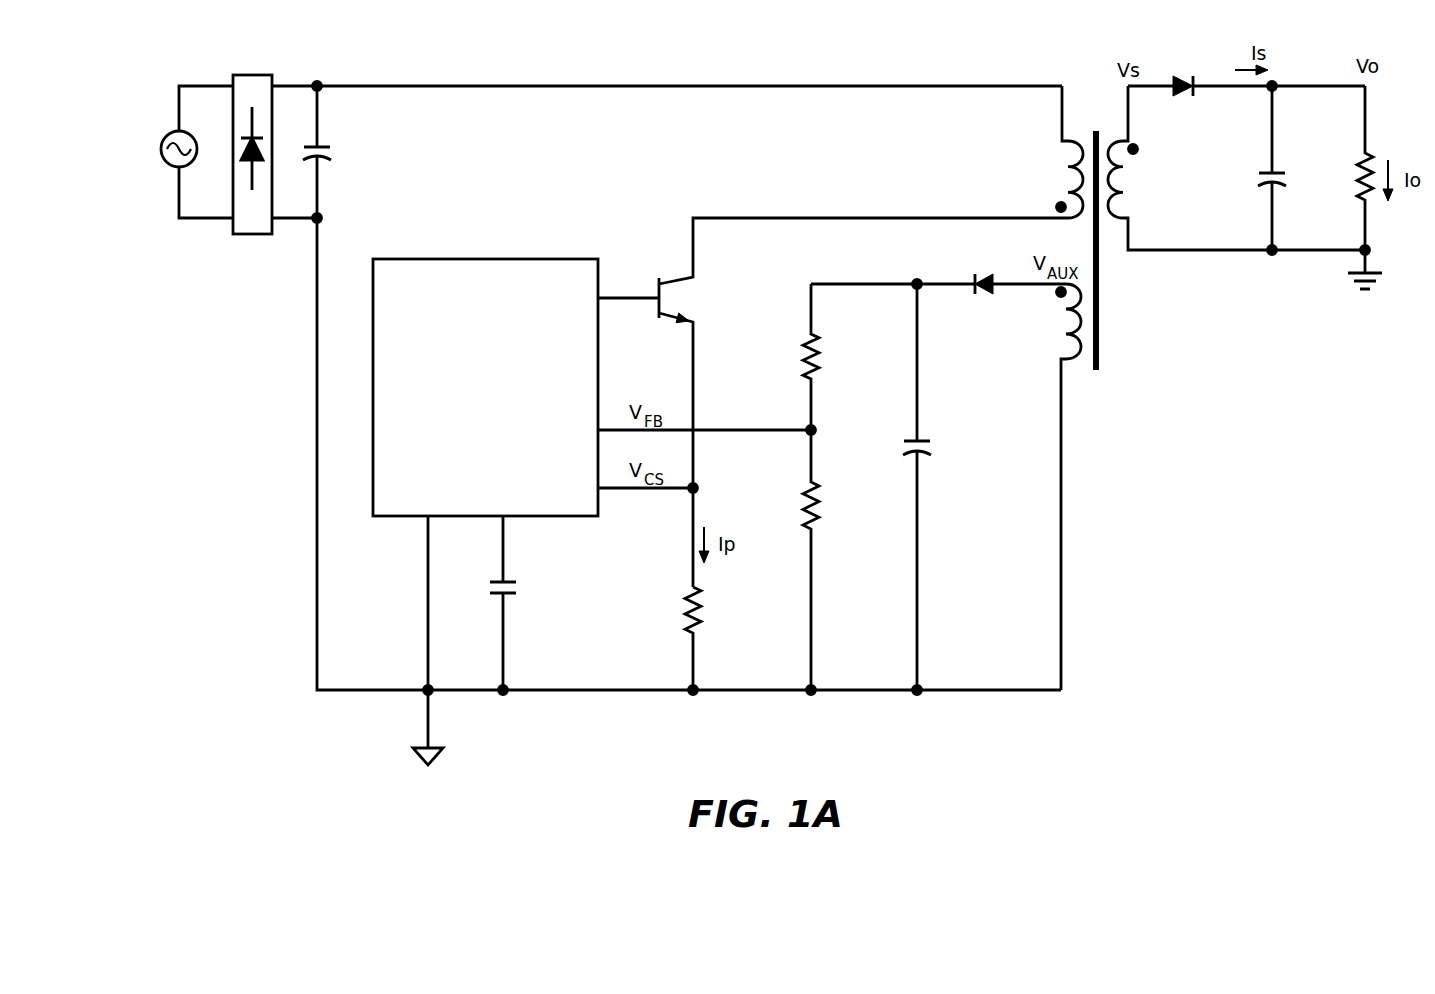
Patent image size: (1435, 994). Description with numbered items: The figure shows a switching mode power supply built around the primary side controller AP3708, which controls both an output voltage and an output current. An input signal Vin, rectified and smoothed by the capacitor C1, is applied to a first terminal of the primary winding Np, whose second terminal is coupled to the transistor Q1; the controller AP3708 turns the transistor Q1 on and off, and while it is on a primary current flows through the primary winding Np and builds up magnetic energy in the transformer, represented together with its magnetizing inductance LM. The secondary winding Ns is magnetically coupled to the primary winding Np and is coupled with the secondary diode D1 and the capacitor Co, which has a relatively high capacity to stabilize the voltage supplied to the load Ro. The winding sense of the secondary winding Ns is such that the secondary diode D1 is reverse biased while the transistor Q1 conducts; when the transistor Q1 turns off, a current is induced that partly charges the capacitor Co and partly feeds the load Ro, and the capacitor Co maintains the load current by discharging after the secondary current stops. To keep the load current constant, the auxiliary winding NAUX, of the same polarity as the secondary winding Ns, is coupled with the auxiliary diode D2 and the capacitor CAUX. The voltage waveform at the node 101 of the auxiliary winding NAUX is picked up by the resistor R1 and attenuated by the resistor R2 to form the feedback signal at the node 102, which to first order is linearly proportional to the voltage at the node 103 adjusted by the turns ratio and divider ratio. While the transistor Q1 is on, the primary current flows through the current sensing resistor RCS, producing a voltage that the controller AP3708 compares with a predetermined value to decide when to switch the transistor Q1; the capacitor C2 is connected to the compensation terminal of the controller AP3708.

The node of the auxiliary winding 101 is at (811, 284).
The feedback node 102 is at (835, 430).
The current sense node 103 is at (716, 490).
The input signal Vin is at (177, 152).
The input capacitor C1 is at (335, 152).
The primary side controller AP3708 is at (592, 387).
The transistor Q1 is at (860, 402).
The current sensing resistor RCS is at (717, 641).
The compensation capacitor C2 is at (519, 605).
The resistor R1 is at (829, 357).
The resistor R2 is at (829, 562).
The auxiliary capacitor CAUX is at (952, 487).
The auxiliary diode D2 is at (989, 269).
The auxiliary winding NAUX is at (1044, 487).
The primary winding Np is at (1057, 152).
The magnetizing inductance LM is at (1117, 250).
The secondary winding Ns is at (1236, 168).
The secondary diode D1 is at (1246, 72).
The output capacitor Co is at (1261, 168).
The load Ro is at (1346, 170).